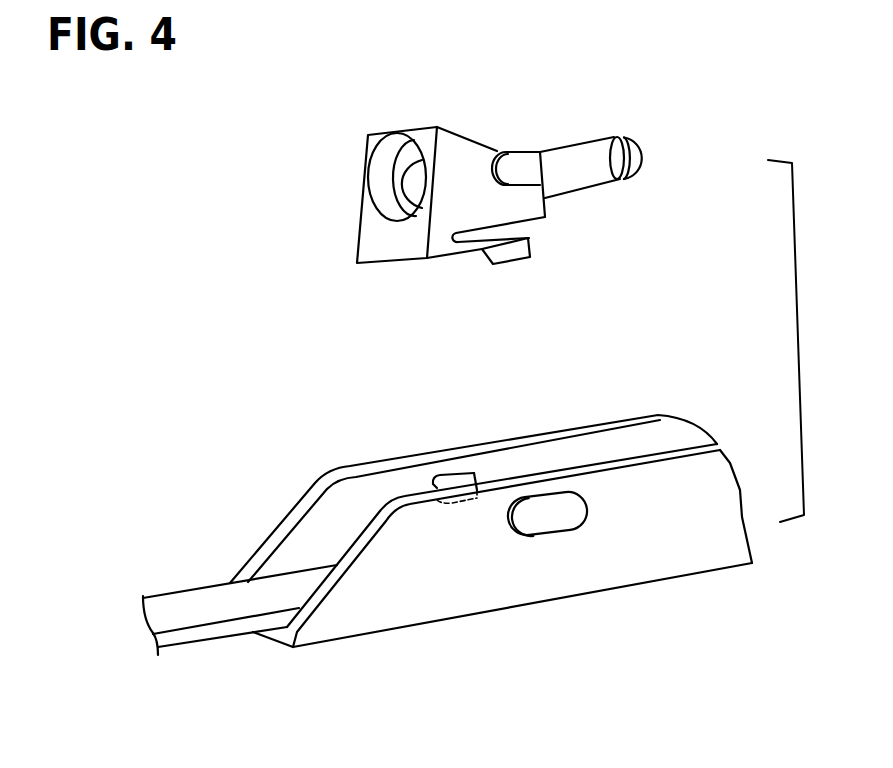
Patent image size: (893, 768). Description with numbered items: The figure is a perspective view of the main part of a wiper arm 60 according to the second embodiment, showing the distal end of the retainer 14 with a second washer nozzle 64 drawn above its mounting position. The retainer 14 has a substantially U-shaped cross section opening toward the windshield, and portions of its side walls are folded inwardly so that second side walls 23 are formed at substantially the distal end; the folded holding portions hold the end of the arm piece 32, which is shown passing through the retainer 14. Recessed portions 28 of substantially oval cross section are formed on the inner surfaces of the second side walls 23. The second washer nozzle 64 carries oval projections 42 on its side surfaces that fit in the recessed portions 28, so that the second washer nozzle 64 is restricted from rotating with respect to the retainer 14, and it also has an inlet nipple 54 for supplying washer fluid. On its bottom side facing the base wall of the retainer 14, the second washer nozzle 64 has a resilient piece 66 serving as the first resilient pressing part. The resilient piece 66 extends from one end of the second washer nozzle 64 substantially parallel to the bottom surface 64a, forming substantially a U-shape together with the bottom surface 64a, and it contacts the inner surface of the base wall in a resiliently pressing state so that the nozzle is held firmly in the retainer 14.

The retainer 14 is at (446, 622).
The second side walls 23 is at (299, 500).
The recessed portions 28 is at (453, 480).
The arm piece 32 is at (178, 598).
The projections 42 is at (517, 163).
The inlet nipple 54 is at (583, 153).
The wiper arm 60 is at (273, 303).
The second washer nozzle 64 is at (438, 127).
The bottom surface 64a is at (533, 223).
The resilient piece 66 is at (510, 256).